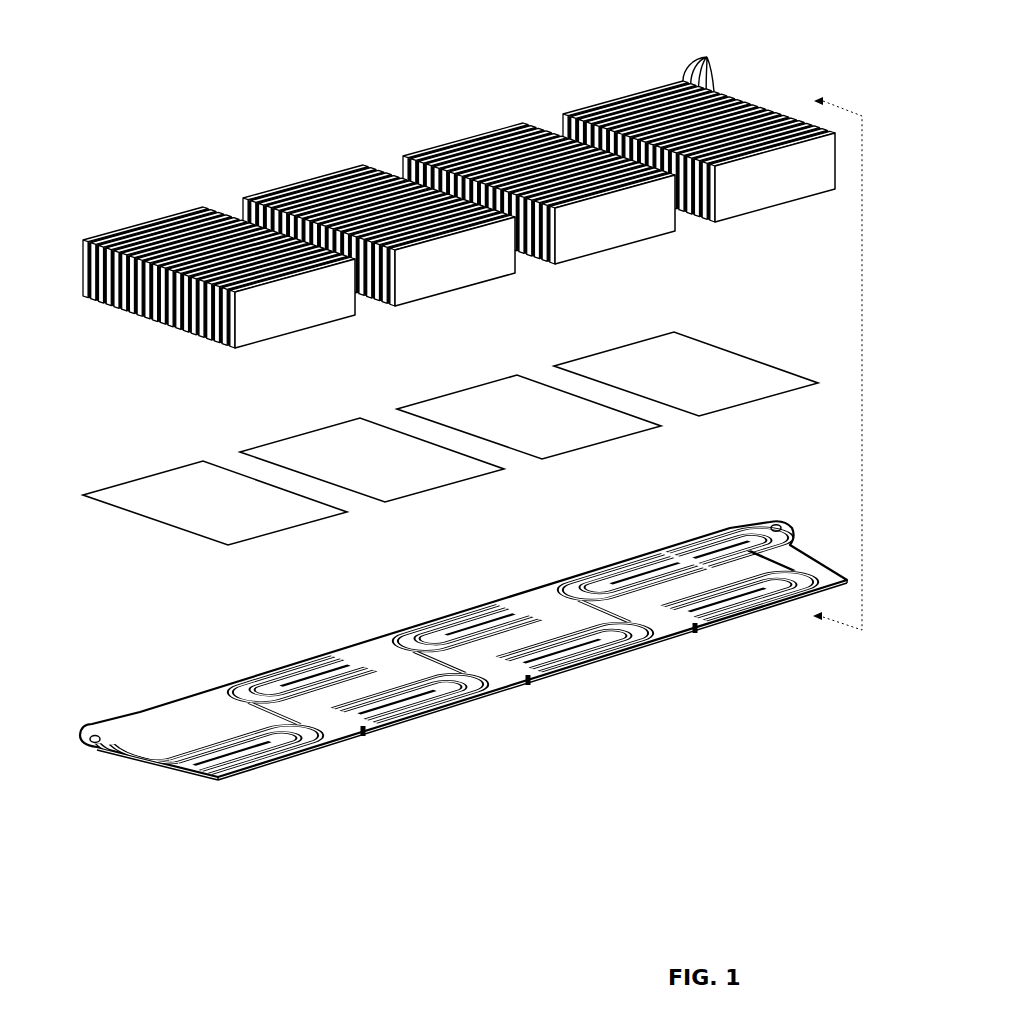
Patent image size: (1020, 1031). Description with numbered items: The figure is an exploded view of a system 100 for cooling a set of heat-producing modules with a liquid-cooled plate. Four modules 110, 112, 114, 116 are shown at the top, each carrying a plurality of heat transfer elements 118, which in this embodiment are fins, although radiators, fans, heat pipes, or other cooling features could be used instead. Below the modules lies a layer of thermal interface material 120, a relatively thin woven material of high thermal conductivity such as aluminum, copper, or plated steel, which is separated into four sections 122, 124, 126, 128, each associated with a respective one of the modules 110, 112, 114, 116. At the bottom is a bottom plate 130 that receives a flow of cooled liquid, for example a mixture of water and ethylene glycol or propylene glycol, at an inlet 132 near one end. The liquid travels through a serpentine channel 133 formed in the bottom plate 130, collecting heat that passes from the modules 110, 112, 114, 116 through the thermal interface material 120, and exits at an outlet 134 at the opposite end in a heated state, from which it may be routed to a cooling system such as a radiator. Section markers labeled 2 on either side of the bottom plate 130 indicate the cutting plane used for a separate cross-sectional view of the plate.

The system 100 is at (476, 428).
The module 110 is at (149, 199).
The module 112 is at (296, 148).
The module 114 is at (456, 103).
The module 116 is at (614, 72).
The heat transfer elements 118 is at (703, 63).
The thermal interface material 120 is at (461, 410).
The section of thermal interface material 122 is at (162, 473).
The section of thermal interface material 124 is at (325, 427).
The section of thermal interface material 126 is at (478, 384).
The section of thermal interface material 128 is at (628, 346).
The bottom plate 130 is at (254, 651).
The inlet 132 is at (770, 523).
The serpentine channel 133 is at (573, 577).
The outlet 134 is at (96, 748).
The section line 2- 2 is at (831, 361).